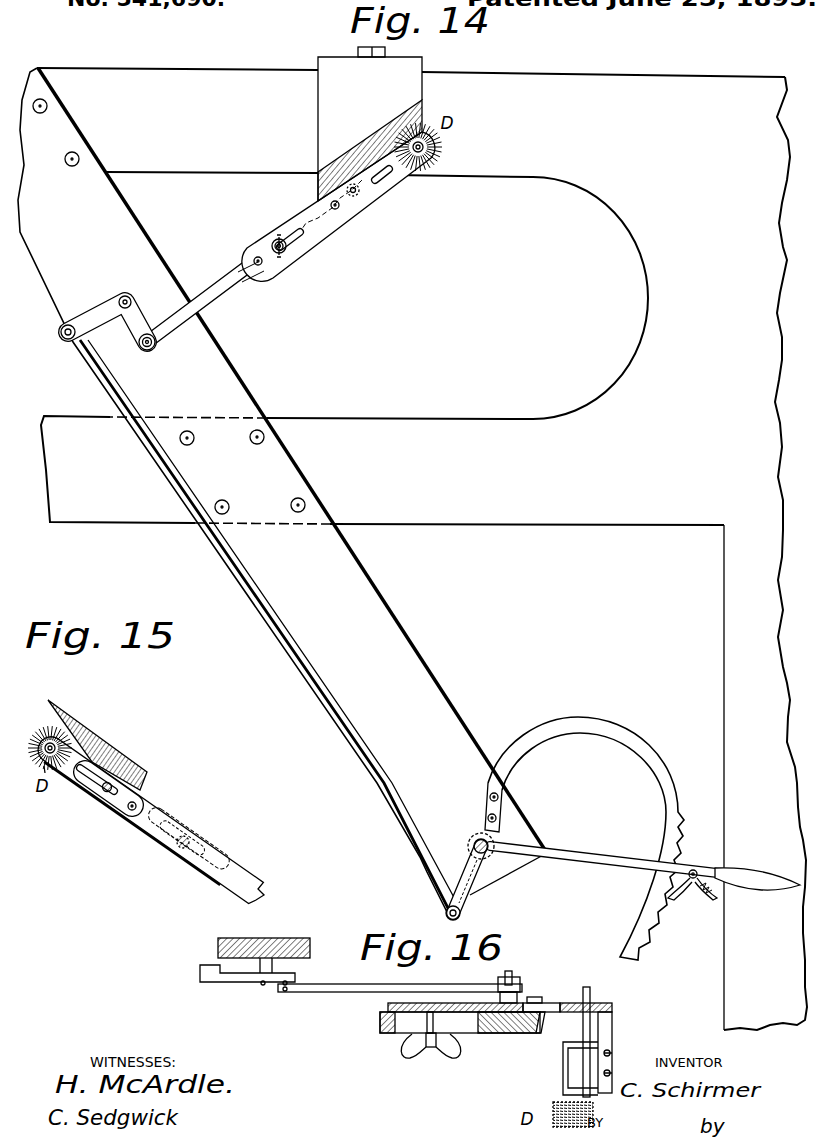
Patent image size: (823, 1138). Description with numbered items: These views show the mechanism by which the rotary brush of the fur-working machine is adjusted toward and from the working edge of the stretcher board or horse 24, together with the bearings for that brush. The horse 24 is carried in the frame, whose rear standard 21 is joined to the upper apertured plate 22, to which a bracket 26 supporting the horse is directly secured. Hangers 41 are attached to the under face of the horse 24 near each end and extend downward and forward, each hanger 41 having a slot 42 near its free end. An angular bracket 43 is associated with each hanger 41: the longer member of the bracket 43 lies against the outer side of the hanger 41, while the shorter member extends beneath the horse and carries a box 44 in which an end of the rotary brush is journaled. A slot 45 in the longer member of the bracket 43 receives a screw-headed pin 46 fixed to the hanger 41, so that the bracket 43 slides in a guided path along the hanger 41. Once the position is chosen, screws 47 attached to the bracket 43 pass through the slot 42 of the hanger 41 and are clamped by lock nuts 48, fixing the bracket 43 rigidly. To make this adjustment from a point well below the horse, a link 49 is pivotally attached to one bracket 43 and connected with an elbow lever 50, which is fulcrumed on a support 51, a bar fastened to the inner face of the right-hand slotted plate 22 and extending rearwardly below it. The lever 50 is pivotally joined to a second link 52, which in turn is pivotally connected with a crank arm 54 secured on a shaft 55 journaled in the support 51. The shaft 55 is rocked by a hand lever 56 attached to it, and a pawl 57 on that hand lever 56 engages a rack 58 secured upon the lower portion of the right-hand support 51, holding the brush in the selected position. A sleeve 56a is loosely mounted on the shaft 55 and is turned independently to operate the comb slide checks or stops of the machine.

In FIG. 14, the standard 21 is at (412, 549).
In FIG. 14, the upper apertured plate 22 is at (409, 296).
In FIG. 14, the stretcher board or horse 24 is at (353, 158).
In FIG. 15, the stretcher board or horse 24 is at (138, 760).
In FIG. 14, the bracket 26 is at (370, 124).
In FIG. 14, the hanger 41 is at (309, 214).
In FIG. 15, the hanger 41 is at (151, 840).
In FIG. 16, the hanger 41 is at (518, 1036).
In FIG. 14, the slot 42 is at (264, 268).
In FIG. 16, the slot 42 is at (396, 1036).
In FIG. 14, the bracket 43 is at (414, 147).
In FIG. 15, the bracket 43 is at (52, 748).
In FIG. 16, the bracket 43 is at (573, 1003).
In FIG. 16, the box 44 is at (578, 1092).
In FIG. 14, the slot 45 is at (372, 187).
In FIG. 15, the slot 45 is at (99, 789).
In FIG. 16, the slot 45 is at (543, 998).
In FIG. 15, the pin 46 is at (101, 801).
In FIG. 16, the pin 46 is at (543, 1025).
In FIG. 15, the screw 47 is at (183, 842).
In FIG. 16, the screw 47 is at (434, 1023).
In FIG. 14, the lock nut 48 is at (276, 240).
In FIG. 16, the lock nut 48 is at (452, 1053).
In FIG. 14, the link 49 is at (222, 295).
In FIG. 15, the link 49 is at (198, 849).
In FIG. 16, the link 49 is at (400, 985).
In FIG. 14, the lever 50 is at (113, 294).
In FIG. 16, the lever 50 is at (243, 983).
In FIG. 14, the support 51 is at (292, 481).
In FIG. 16, the support 51 is at (290, 938).
In FIG. 14, the second link 52 is at (164, 470).
In FIG. 16, the second link 52 is at (200, 969).
In FIG. 14, the crank arm 54 is at (477, 893).
In FIG. 14, the shaft 55 is at (496, 823).
In FIG. 14, the hand lever 56 is at (628, 865).
In FIG. 14, the sleeve 56a is at (470, 845).
In FIG. 14, the pawl 57 is at (685, 891).
In FIG. 14, the rack 58 is at (679, 808).